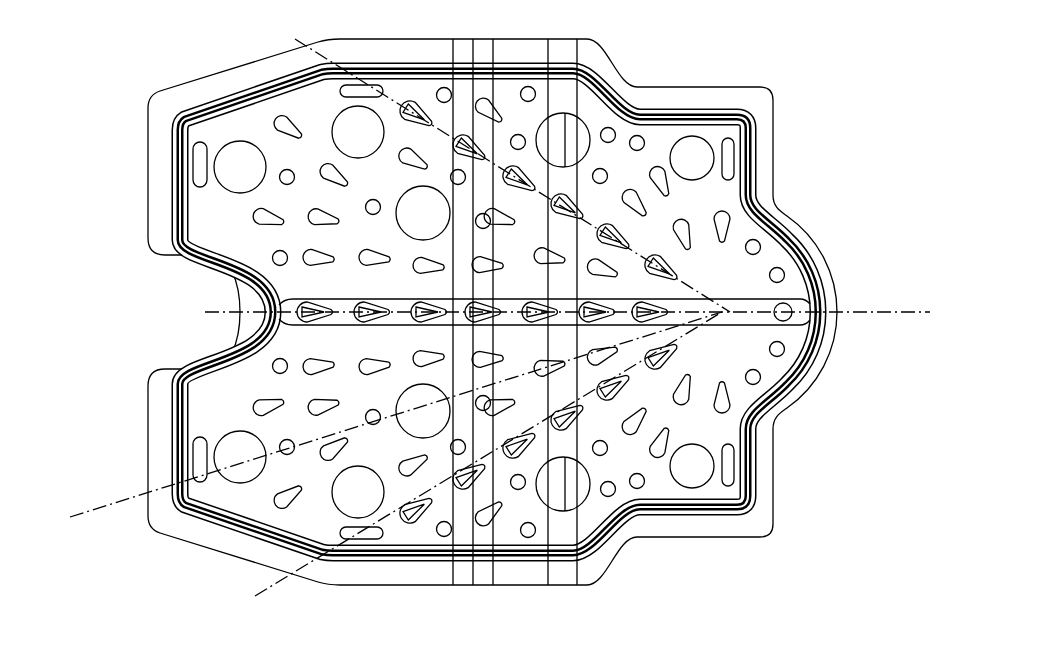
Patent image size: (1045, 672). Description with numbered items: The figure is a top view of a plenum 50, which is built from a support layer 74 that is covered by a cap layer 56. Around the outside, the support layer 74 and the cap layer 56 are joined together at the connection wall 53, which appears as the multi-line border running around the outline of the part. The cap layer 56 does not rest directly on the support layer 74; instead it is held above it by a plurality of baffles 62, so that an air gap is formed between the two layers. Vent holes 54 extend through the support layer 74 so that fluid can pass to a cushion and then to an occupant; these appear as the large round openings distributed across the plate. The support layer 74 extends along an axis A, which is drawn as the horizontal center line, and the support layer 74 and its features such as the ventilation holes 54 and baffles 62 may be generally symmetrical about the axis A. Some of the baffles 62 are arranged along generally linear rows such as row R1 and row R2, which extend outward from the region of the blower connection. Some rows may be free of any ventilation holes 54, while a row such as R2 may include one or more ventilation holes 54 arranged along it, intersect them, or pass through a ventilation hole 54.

The plenum 50 is at (160, 76).
The connection wall 53 is at (714, 92).
The vent holes 54 is at (347, 128).
The cap layer 56 is at (692, 200).
The baffles 62 is at (312, 362).
The support layer 74 is at (794, 519).
The row R1 is at (471, 309).
The row R2 is at (370, 422).
The axis A is at (554, 313).